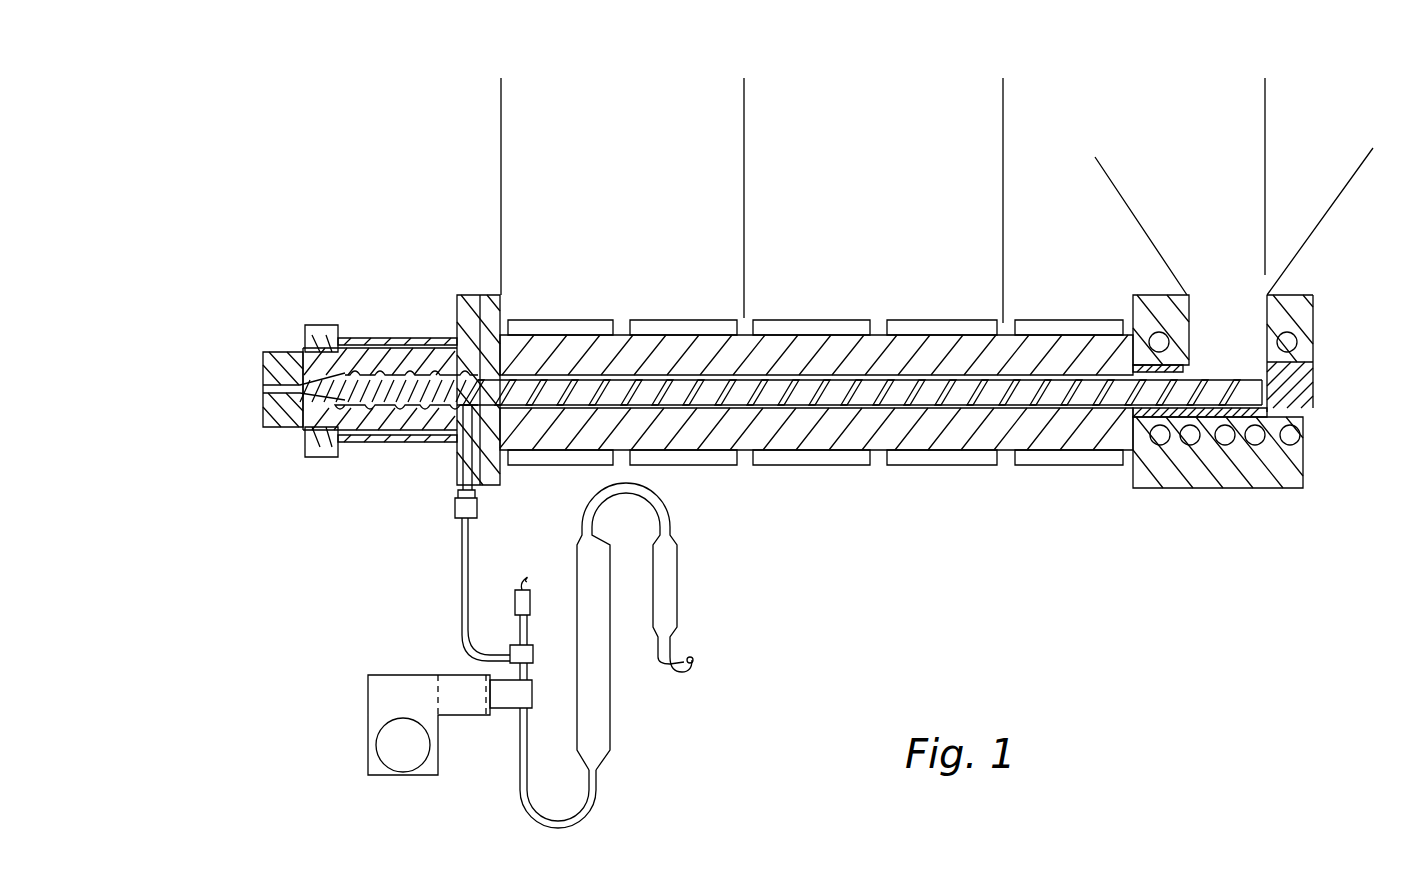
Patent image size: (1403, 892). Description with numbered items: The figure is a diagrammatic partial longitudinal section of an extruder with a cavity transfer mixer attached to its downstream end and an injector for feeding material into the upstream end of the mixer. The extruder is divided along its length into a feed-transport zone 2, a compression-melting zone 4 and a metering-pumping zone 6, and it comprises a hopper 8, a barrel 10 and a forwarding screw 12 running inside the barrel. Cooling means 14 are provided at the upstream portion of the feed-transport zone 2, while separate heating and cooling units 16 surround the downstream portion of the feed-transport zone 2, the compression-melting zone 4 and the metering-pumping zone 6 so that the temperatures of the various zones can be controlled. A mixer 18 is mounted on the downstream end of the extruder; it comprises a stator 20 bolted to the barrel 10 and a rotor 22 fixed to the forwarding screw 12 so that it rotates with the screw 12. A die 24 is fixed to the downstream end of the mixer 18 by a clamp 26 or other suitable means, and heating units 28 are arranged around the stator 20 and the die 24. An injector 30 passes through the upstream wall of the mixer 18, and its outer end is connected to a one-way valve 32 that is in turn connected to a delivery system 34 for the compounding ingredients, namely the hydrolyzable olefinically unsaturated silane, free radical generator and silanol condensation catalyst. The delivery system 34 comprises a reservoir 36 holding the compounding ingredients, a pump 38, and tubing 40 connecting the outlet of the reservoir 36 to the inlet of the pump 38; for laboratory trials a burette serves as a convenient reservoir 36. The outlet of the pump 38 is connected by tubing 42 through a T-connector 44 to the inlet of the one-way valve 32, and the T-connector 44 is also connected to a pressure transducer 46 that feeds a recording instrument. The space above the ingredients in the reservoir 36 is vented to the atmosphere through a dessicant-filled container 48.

The feed-transport zone 2 is at (1265, 115).
The compression-melting zone 4 is at (1003, 115).
The metering-pumping zone 6 is at (744, 115).
The hopper 8 is at (1352, 182).
The barrel 10 is at (1008, 455).
The forwarding screw 12 is at (1228, 387).
The cooling means 14 is at (1298, 437).
The heating and cooling units 16 is at (1075, 302).
The mixer 18 is at (357, 437).
The stator 20 is at (355, 353).
The rotor 22 is at (397, 397).
The die 24 is at (262, 418).
The clamp 26 is at (303, 330).
The heating units 28 is at (420, 338).
The injector 30 is at (458, 472).
The one-way valve 32 is at (475, 508).
The delivery system 34 is at (445, 640).
The reservoir 36 is at (592, 672).
The pump 38 is at (468, 700).
The tubing 40 is at (522, 795).
The tubing 42 is at (522, 675).
The T-connector 44 is at (528, 656).
The pressure transducer 46 is at (524, 603).
The dessicant-filled container 48 is at (672, 595).